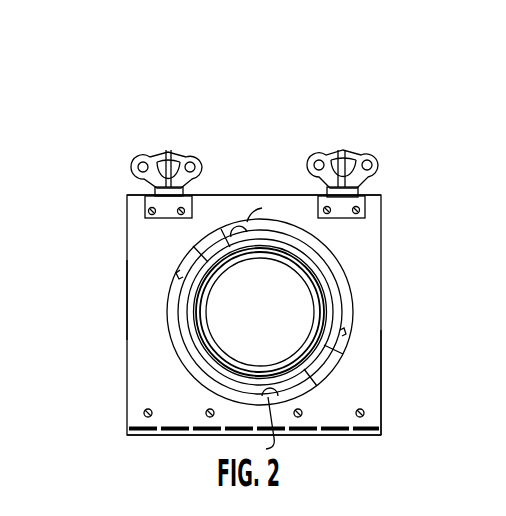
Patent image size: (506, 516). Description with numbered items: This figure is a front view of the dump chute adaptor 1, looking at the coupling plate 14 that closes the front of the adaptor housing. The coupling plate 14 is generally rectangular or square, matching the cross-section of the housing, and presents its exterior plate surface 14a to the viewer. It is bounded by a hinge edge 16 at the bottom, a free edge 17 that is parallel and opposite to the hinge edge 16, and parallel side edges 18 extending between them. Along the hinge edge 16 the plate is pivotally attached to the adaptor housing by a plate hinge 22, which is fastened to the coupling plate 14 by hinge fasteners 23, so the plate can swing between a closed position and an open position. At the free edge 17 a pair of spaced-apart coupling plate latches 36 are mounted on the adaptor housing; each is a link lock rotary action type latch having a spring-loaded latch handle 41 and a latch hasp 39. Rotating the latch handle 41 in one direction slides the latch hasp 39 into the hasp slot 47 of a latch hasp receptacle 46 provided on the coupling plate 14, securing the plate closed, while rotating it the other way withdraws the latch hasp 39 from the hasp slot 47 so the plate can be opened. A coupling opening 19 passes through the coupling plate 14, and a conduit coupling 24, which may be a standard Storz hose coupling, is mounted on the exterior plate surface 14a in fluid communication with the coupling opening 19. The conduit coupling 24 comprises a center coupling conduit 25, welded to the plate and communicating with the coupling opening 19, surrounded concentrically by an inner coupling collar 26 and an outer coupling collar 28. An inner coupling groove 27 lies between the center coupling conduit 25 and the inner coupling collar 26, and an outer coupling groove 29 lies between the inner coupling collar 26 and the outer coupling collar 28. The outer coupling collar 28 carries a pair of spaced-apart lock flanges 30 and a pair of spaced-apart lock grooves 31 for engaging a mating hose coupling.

The dump chute adaptor 1 is at (127, 88).
The coupling plate 14 is at (118, 221).
The exterior plate surface 14a is at (362, 354).
The hinge edge 16 is at (338, 436).
The free edge 17 is at (232, 194).
The side edges 18 is at (127, 298).
The coupling opening 19 is at (294, 282).
The plate hinge 22 is at (180, 435).
The hinge fastener 23 is at (208, 410).
The conduit coupling 24 is at (356, 285).
The center coupling conduit 25 is at (306, 294).
The inner coupling collar 26 is at (200, 282).
The inner coupling groove 27 is at (225, 352).
The outer coupling collar 28 is at (167, 266).
The outer coupling groove 29 is at (172, 322).
The lock flanges 30 is at (208, 249).
The lock grooves 31 is at (256, 327).
The coupling plate latch 36 is at (299, 131).
The latch hasp 39 is at (140, 165).
The latch handle 41 is at (148, 154).
The latch hasp receptacle 46 is at (145, 203).
The hasp slot 47 is at (165, 150).